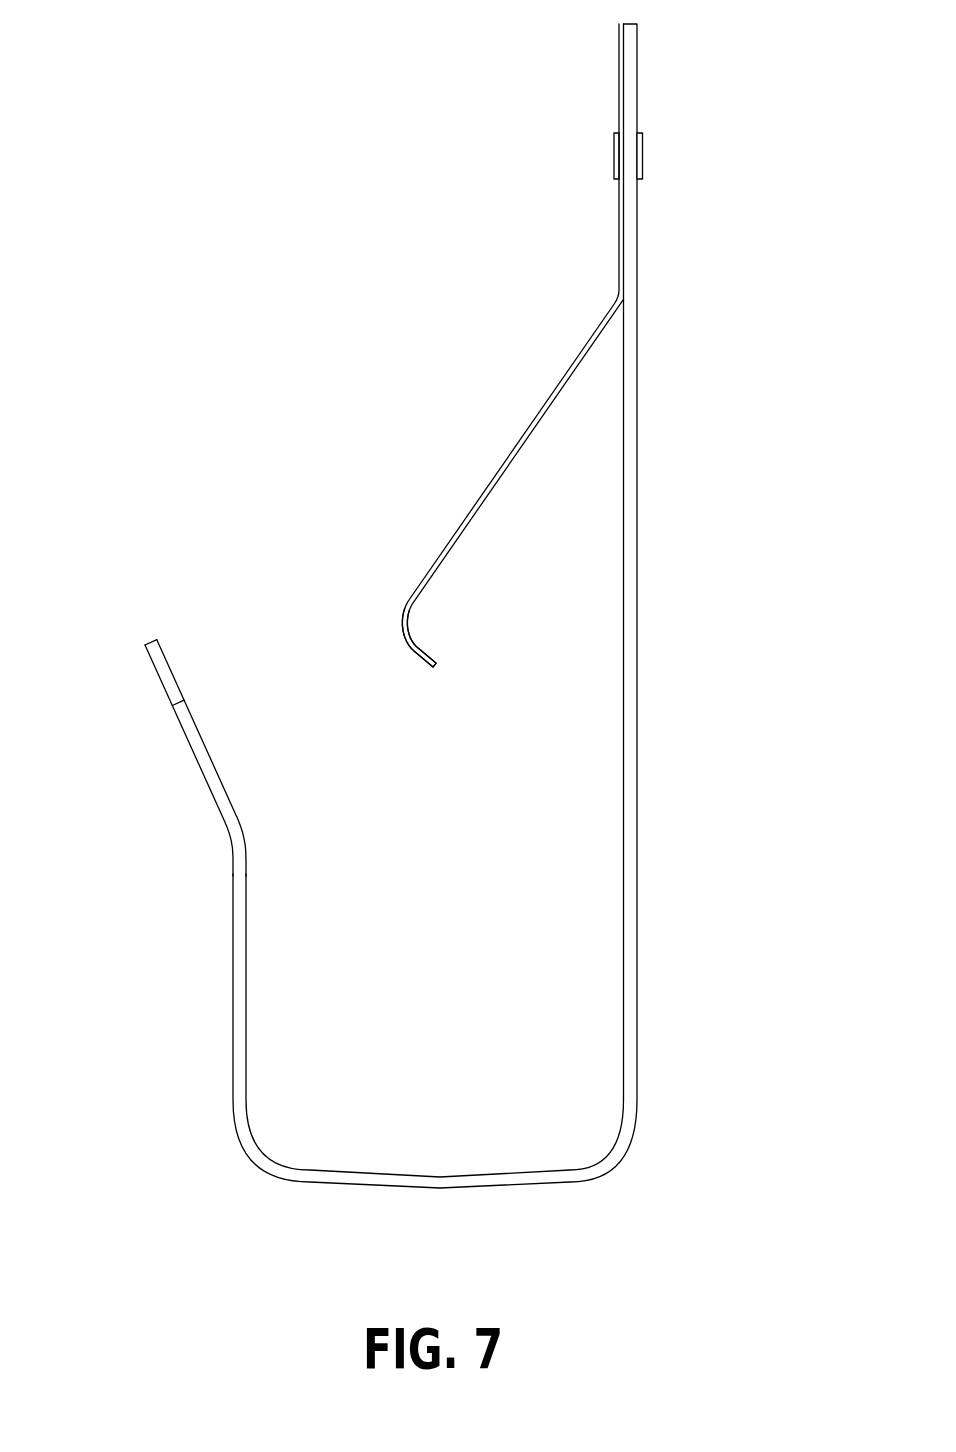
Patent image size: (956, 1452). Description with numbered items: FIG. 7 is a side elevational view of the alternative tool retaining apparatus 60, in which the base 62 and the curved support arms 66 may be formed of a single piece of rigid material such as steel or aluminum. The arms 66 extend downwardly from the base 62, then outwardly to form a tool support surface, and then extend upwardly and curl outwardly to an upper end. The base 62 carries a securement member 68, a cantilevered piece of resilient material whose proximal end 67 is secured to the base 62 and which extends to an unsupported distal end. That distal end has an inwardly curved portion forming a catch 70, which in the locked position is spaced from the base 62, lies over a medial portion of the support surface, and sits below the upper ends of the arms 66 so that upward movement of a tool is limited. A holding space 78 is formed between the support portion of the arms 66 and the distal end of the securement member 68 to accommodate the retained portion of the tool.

The tool retaining apparatus 60 is at (528, 153).
The base 62 is at (637, 650).
The curved support arms 66 is at (233, 852).
The proximal end 67 is at (619, 240).
The securement member 68 is at (516, 450).
The catch 70 is at (403, 632).
The holding space 78 is at (467, 923).